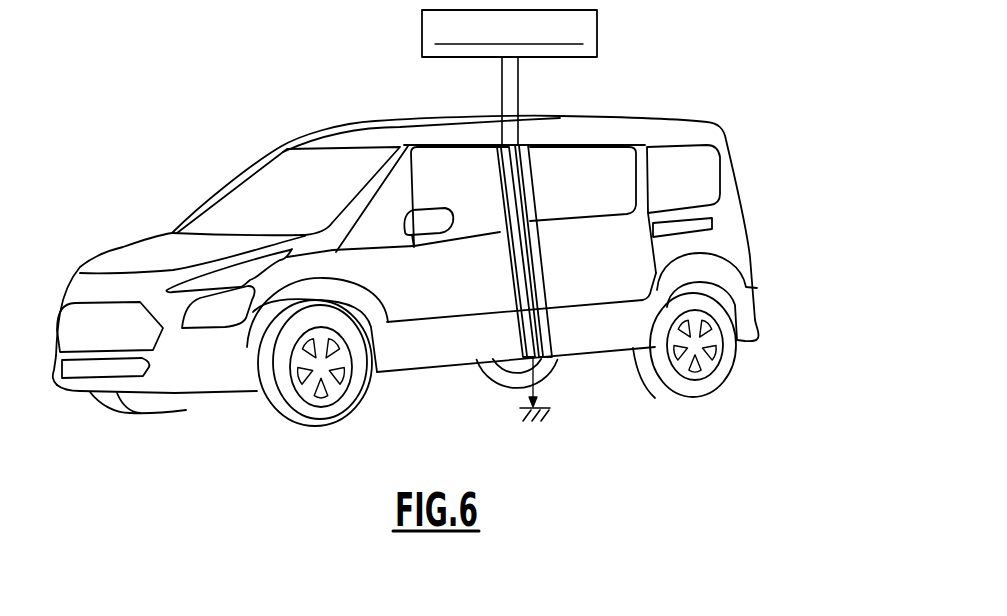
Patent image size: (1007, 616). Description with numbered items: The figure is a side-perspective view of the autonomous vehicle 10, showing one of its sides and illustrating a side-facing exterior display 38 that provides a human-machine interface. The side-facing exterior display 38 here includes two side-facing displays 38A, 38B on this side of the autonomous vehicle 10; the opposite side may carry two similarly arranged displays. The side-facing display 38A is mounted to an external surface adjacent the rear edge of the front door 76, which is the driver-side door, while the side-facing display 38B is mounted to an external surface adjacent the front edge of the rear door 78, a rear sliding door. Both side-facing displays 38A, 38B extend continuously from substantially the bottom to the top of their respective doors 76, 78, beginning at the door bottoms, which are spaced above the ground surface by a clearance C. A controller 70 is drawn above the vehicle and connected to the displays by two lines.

The autonomous vehicle 10 is at (718, 76).
The side-facing exterior display 38 is at (531, 258).
The side-facing display 38A is at (496, 303).
The side-facing display 38B is at (569, 295).
The controller 70 is at (597, 33).
The front door 76 is at (437, 337).
The rear door 78 is at (628, 307).
The clearance C is at (537, 392).